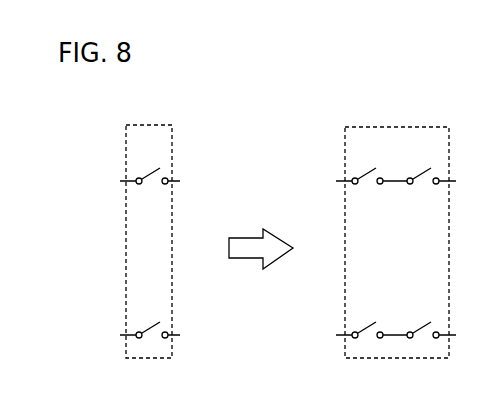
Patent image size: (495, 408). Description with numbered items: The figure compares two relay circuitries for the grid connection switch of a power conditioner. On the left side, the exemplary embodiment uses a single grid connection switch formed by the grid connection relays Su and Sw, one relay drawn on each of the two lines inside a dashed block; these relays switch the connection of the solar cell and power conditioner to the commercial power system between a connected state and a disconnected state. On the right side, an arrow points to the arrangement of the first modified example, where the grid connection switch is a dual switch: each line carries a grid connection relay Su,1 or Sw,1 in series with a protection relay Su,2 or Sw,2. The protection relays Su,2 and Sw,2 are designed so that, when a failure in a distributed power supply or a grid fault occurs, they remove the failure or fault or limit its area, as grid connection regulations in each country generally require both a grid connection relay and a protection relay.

The grid connection relay Su is at (150, 164).
The grid connection relay Sw is at (150, 318).
The grid connection relay Su,1 is at (364, 164).
The protection relay Su,2 is at (424, 164).
The grid connection relay Sw,1 is at (364, 318).
The protection relay Sw,2 is at (424, 318).